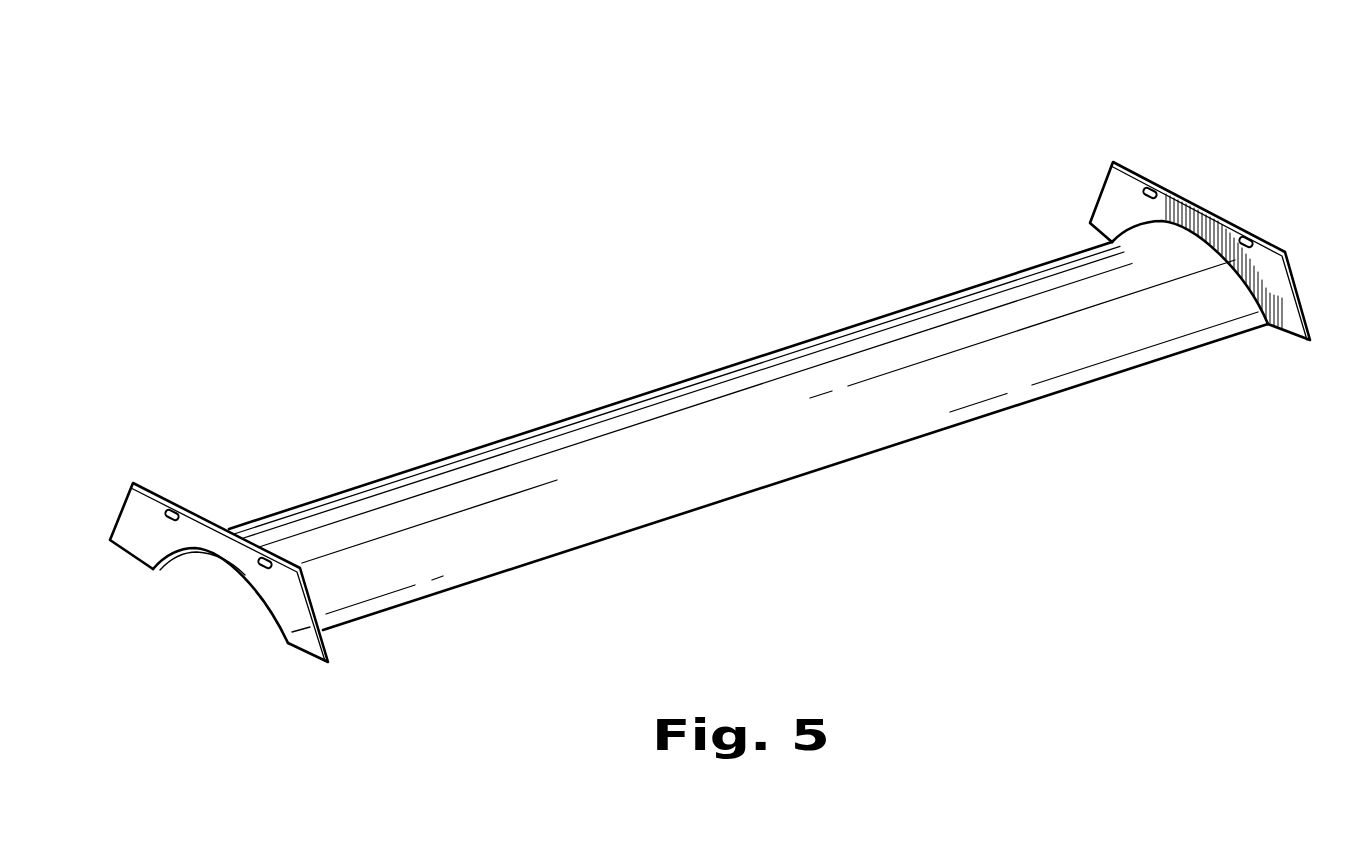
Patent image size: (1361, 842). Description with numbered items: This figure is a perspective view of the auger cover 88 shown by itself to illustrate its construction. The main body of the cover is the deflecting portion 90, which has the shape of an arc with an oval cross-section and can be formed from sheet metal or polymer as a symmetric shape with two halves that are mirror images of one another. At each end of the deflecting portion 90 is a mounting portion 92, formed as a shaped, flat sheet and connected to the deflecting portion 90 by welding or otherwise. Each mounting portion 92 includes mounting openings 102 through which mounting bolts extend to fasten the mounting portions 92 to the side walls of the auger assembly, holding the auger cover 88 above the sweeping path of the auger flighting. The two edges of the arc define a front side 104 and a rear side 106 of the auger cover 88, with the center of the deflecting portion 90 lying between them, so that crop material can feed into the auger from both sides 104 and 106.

The auger cover 88 is at (692, 243).
The deflecting portion 90 is at (683, 413).
The mounting portion 92 is at (289, 645).
The mounting opening 102 is at (176, 508).
The front side 104 is at (177, 556).
The rear side 106 is at (262, 603).